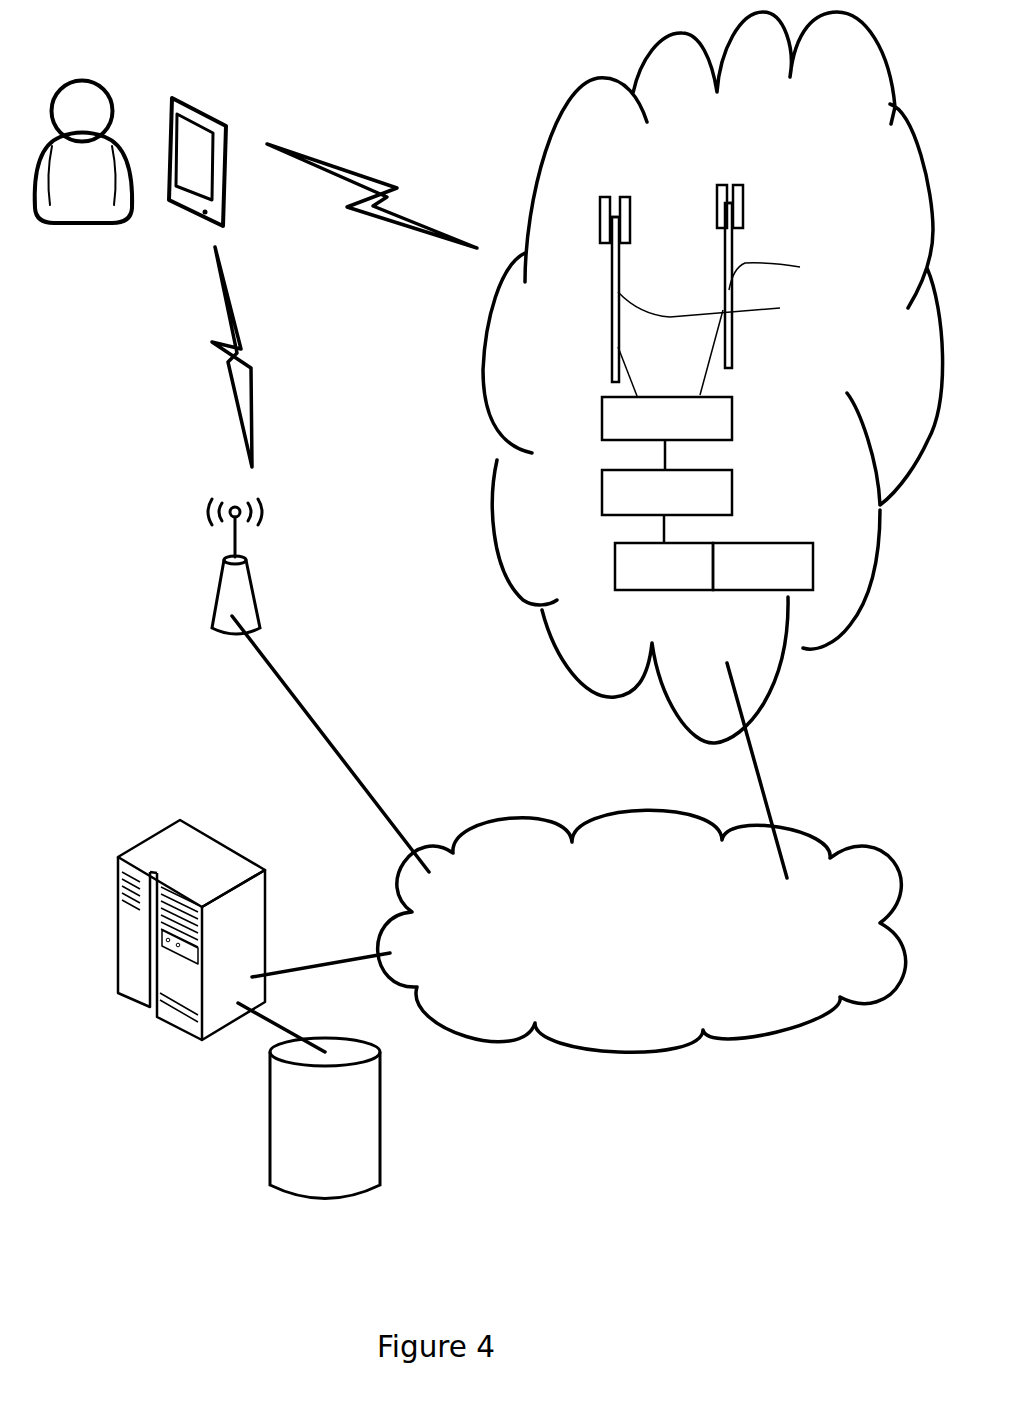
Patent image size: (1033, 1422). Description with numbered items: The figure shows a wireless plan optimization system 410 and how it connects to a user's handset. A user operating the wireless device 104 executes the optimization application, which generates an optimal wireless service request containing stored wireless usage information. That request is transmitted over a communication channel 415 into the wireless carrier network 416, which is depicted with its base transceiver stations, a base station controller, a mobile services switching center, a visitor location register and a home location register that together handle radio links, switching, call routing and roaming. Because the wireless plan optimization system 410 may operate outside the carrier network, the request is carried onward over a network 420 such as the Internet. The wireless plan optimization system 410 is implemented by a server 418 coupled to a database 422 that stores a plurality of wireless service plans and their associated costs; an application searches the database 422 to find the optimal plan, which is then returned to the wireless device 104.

The wireless device 104 is at (220, 130).
The communication channel 415 is at (360, 178).
The wireless carrier network 416 is at (713, 377).
The wireless plan optimization system 410 is at (155, 772).
The server 418 is at (190, 863).
The network 420 is at (642, 931).
The database 422 is at (362, 1160).